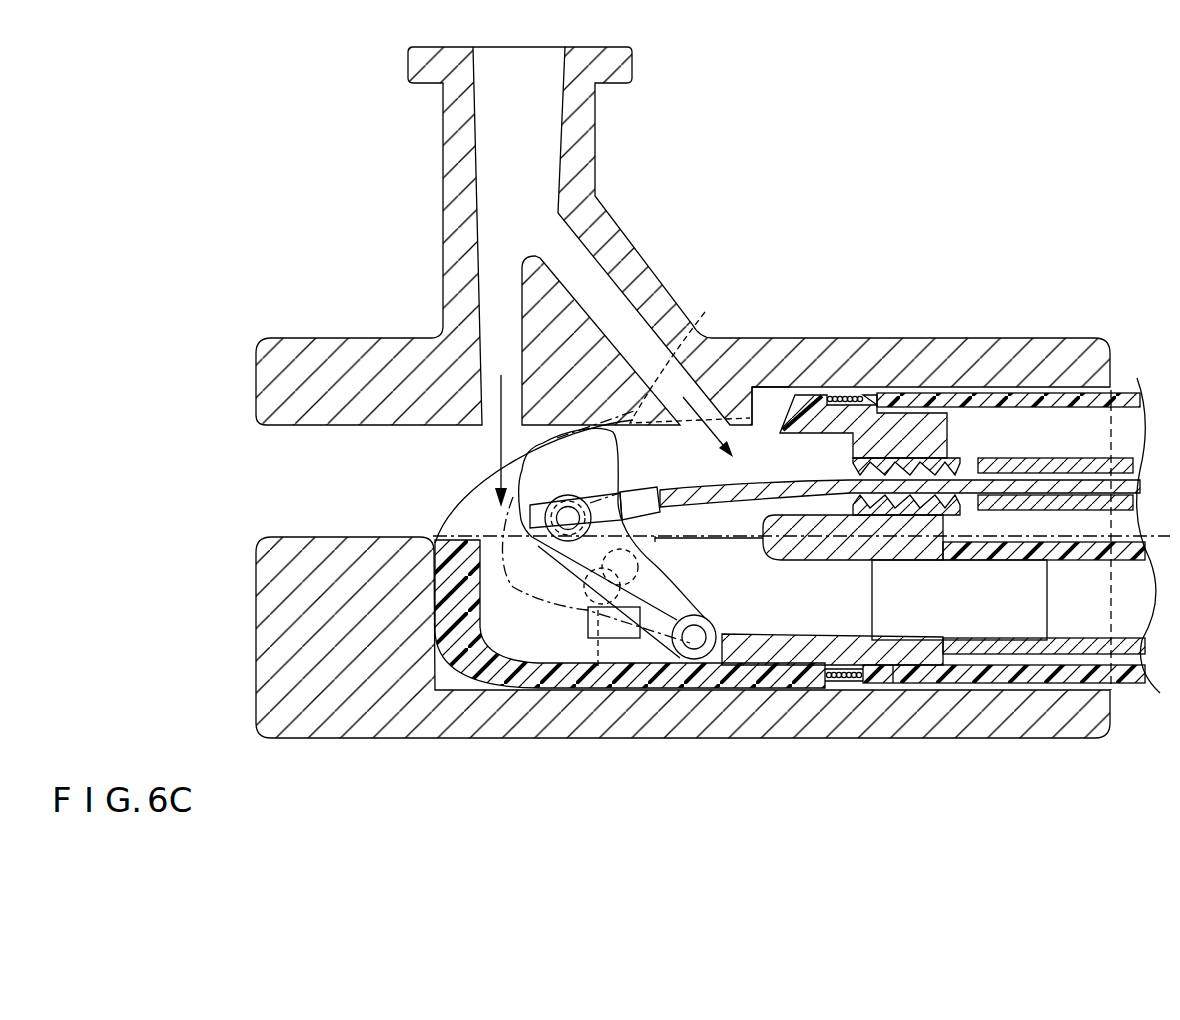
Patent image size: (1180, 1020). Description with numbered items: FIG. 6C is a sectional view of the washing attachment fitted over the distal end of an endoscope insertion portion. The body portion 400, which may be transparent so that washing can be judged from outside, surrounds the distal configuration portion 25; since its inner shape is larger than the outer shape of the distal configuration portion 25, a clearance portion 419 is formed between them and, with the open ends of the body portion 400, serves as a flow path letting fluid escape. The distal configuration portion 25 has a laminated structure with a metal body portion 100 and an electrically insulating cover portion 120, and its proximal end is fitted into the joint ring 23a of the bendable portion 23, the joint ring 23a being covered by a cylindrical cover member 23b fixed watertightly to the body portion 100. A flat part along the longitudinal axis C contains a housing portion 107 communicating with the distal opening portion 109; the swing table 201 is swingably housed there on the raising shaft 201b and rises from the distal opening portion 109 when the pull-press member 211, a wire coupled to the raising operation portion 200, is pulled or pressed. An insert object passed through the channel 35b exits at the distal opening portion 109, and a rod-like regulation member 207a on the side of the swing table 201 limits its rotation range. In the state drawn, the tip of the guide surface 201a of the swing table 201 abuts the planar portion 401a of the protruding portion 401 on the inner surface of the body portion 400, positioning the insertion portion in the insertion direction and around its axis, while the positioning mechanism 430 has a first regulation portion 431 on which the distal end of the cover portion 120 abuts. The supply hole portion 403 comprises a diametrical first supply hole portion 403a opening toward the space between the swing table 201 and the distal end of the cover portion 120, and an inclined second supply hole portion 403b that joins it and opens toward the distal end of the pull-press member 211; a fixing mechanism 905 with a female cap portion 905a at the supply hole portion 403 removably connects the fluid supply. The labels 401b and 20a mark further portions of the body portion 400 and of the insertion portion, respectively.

The body portion 400 is at (683, 417).
The protruding portion 401 is at (468, 236).
The planar portion 401a is at (387, 422).
The housing step 401b is at (772, 405).
The supply hole portion 403 is at (805, 236).
The first supply hole portion 403a is at (805, 236).
The second supply hole portion 403b is at (834, 236).
The fixing mechanism 905 is at (834, 236).
The female cap portion 905a is at (632, 72).
The raising operation portion 200 is at (584, 440).
The swing table 201 is at (633, 420).
The guide surface 201a is at (645, 600).
The raising shaft 201b is at (693, 649).
The regulation member 207a is at (605, 585).
The distal opening portion 109 is at (640, 406).
The housing portion 107 is at (757, 392).
The pull-press member 211 is at (910, 477).
The clearance portion 419 is at (1067, 392).
The channel 35b is at (1120, 553).
The sheath tube 20a is at (1072, 542).
The body portion 100 is at (832, 707).
The cover portion 120 is at (753, 677).
The bendable portion 23 is at (992, 594).
The joint ring 23a is at (985, 737).
The cover member 23b is at (1043, 682).
The distal configuration portion 25 is at (447, 678).
The positioning mechanism 430 is at (683, 662).
The first regulation portion 431 is at (346, 625).
The longitudinal axis C is at (435, 537).